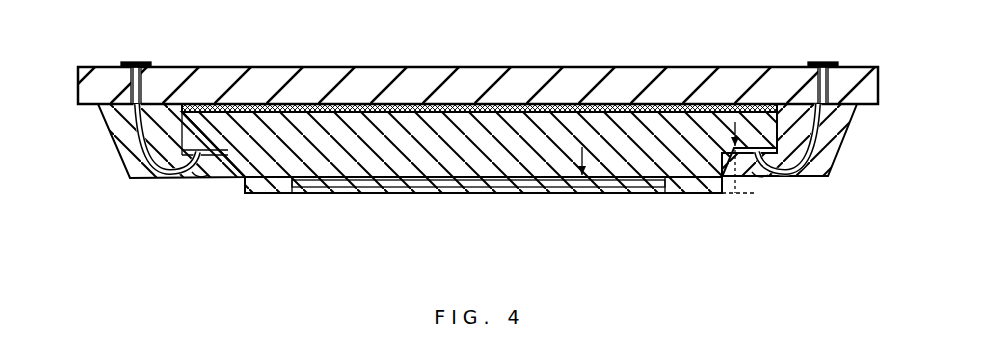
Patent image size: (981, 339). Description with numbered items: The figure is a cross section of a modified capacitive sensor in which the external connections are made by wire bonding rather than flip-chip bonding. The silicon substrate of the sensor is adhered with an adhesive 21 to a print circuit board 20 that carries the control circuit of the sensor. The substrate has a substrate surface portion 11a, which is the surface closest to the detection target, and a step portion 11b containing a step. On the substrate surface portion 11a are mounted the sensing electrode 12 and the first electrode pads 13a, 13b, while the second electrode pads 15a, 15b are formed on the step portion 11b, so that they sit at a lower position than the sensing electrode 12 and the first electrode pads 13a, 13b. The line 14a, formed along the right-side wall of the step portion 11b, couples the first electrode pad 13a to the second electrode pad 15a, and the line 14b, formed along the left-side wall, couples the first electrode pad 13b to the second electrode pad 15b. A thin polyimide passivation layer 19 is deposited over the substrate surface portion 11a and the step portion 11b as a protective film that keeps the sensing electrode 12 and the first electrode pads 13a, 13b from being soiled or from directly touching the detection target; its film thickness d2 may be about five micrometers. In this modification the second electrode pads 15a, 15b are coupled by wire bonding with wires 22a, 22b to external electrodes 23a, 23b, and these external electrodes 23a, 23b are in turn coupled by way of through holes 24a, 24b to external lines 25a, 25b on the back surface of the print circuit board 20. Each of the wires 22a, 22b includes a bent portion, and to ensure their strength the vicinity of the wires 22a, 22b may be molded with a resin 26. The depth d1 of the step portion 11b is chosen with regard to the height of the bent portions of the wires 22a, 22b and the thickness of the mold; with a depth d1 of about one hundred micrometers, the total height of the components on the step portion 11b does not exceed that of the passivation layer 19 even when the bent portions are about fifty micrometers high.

The substrate surface portion 11a is at (238, 197).
The step portion 11b is at (207, 128).
The sensing electrode 12 is at (370, 195).
The first electrode pad 13a is at (673, 195).
The first electrode pad 13b is at (277, 195).
The line 14a is at (700, 196).
The line 14b is at (232, 180).
The second electrode pad 15a is at (765, 178).
The second electrode pad 15b is at (202, 182).
The passivation layer 19 is at (440, 195).
The print circuit board 20 is at (440, 78).
The adhesive 21 is at (518, 103).
The wire 22a is at (840, 150).
The wire 22b is at (120, 150).
The external electrode 23a is at (845, 118).
The external electrode 23b is at (114, 116).
The through hole 24a is at (850, 80).
The through hole 24b is at (128, 80).
The external line 25a is at (822, 62).
The external line 25b is at (137, 62).
The resin 26 is at (829, 178).
The depth of the step portion d1 is at (735, 196).
The film thickness of the passivation layer d2 is at (582, 195).